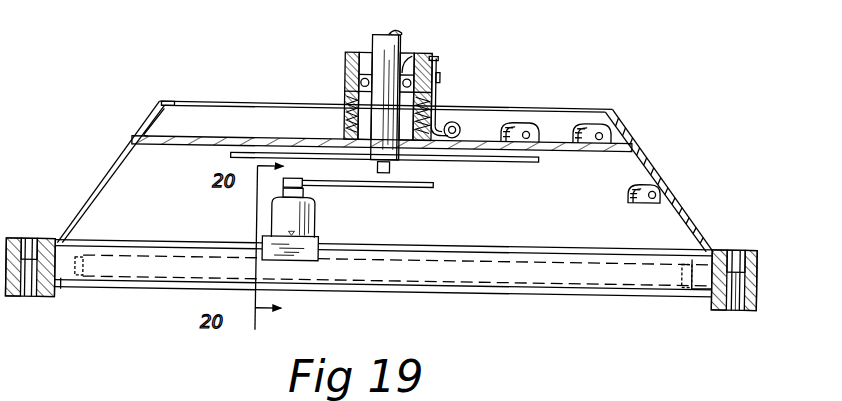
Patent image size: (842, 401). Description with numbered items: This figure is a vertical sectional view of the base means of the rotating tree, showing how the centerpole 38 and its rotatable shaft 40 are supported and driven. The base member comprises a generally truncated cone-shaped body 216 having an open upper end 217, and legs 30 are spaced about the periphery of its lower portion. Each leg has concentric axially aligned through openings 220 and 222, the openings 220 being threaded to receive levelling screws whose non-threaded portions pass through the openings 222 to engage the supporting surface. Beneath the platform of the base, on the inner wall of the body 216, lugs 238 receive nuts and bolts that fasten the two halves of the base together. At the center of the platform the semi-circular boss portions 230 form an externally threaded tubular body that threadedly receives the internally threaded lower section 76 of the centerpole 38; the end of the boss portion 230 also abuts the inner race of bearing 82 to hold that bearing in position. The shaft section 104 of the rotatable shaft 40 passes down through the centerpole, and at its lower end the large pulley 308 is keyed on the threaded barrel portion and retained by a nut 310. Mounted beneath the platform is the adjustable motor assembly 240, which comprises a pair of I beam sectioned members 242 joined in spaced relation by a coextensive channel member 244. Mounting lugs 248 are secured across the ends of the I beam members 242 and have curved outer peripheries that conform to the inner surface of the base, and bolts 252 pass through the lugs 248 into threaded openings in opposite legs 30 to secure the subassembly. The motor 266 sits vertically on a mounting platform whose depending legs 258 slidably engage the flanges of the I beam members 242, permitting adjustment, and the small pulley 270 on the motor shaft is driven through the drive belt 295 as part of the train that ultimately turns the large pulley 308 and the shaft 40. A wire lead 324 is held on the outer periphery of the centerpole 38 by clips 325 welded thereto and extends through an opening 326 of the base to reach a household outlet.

The legs 30 is at (758, 254).
The centerpole 38 is at (338, 72).
The rotatable shaft 40 is at (401, 33).
The lower section of centerpole 76 is at (348, 54).
The bearing assemblies 82 is at (406, 63).
The shaft section 104 is at (373, 35).
The truncated cone-shaped body 216 is at (647, 163).
The open upper end 217 is at (170, 103).
The through openings 220 is at (734, 246).
The through openings 222 is at (737, 306).
The semi-circular boss portion 230 is at (352, 137).
The lugs 238 is at (648, 203).
The adjustable motor assembly 240 is at (248, 238).
The I beam sectioned members 242 is at (378, 292).
The channel member 244 is at (461, 292).
The mounting lugs 248 is at (62, 294).
The bolts 252 is at (86, 271).
The depending legs 258 is at (319, 241).
The motor 266 is at (312, 223).
The small pulley 270 is at (298, 180).
The drive belt 295 is at (367, 188).
The large pulley 308 is at (230, 158).
The nut 310 is at (390, 170).
The wire lead 324 is at (436, 60).
The clips 325 is at (441, 78).
The opening 326 is at (453, 122).